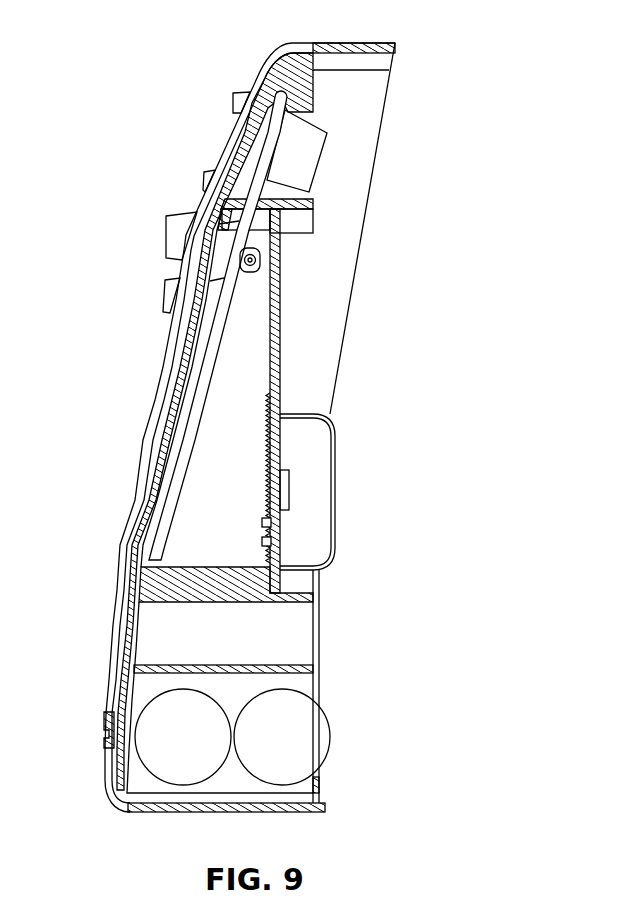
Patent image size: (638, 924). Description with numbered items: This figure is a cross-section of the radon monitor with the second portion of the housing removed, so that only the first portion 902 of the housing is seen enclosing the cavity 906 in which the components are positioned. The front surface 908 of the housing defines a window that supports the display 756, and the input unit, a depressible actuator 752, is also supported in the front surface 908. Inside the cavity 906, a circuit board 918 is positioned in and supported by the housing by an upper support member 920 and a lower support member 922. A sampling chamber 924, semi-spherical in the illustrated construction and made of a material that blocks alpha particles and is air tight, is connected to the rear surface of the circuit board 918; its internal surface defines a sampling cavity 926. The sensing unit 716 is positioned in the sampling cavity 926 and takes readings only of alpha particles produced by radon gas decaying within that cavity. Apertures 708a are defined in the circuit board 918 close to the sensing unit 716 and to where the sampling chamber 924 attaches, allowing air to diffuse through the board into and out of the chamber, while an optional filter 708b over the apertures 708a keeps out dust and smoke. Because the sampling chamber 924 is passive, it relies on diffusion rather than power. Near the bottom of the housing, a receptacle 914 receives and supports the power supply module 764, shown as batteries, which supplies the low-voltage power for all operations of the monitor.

The first portion 902 is at (312, 46).
The cavity 906 is at (325, 250).
The front surface 908 is at (173, 297).
The depressible actuator 752 is at (177, 237).
The display 756 is at (262, 143).
The upper support member 920 is at (300, 219).
The circuit board 918 is at (278, 335).
The filter 708b is at (267, 400).
The apertures 708a is at (270, 540).
The sampling chamber 924 is at (333, 430).
The sampling cavity 926 is at (313, 532).
The sensing unit 716 is at (289, 483).
The lower support member 922 is at (260, 590).
The receptacle 914 is at (303, 680).
The power supply module 764 is at (315, 745).